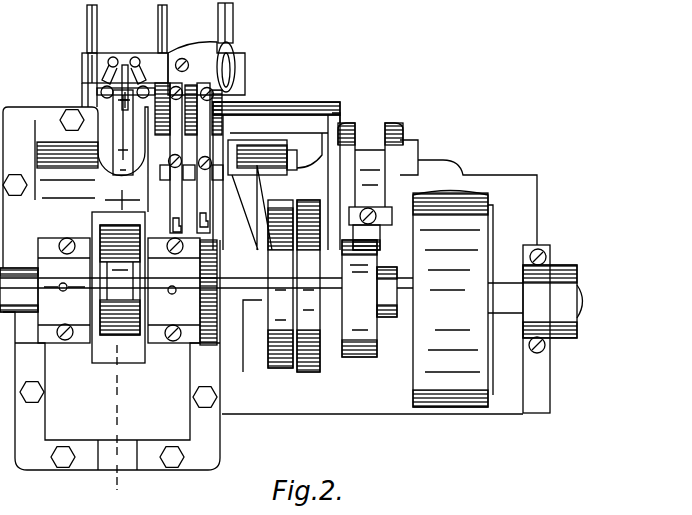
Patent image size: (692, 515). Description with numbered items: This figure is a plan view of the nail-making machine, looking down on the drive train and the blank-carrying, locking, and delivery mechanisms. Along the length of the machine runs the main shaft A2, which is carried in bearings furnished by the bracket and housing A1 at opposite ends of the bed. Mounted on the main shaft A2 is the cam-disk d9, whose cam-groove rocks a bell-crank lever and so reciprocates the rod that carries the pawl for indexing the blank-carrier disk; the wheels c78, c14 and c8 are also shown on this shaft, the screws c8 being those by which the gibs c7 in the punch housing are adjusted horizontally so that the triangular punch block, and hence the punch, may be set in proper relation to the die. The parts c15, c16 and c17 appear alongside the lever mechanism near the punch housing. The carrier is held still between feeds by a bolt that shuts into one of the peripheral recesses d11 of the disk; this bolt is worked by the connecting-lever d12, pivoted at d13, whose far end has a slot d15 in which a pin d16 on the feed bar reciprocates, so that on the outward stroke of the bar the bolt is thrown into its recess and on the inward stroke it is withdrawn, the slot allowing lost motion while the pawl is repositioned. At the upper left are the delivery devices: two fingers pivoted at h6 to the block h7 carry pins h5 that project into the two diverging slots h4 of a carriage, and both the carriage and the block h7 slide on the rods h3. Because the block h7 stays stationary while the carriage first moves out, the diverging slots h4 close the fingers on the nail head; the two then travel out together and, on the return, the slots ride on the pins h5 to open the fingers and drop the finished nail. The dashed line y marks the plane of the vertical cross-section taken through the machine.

The bracket and housing A1 is at (293, 286).
The main shaft A2 is at (261, 290).
The gibs c7 is at (125, 282).
The cam-disk d9 is at (280, 284).
The gear wheel c78 is at (308, 286).
The screws c8 is at (345, 292).
The clutch wheel and drum c14 is at (340, 120).
The shifter hub c15 is at (275, 191).
The shifter lever c16 is at (190, 180).
The shifter lever c17 is at (208, 198).
The rods h3 is at (86, 22).
The diverging slots h4 is at (84, 66).
The pins h5 is at (80, 54).
The pivot h6 is at (172, 26).
The block h7 is at (84, 90).
The recesses d11 is at (112, 55).
The connecting-lever d12 is at (196, 64).
The pivot d13 is at (206, 58).
The slot d15 is at (240, 64).
The pin d16 is at (238, 42).
The section line y is at (126, 424).